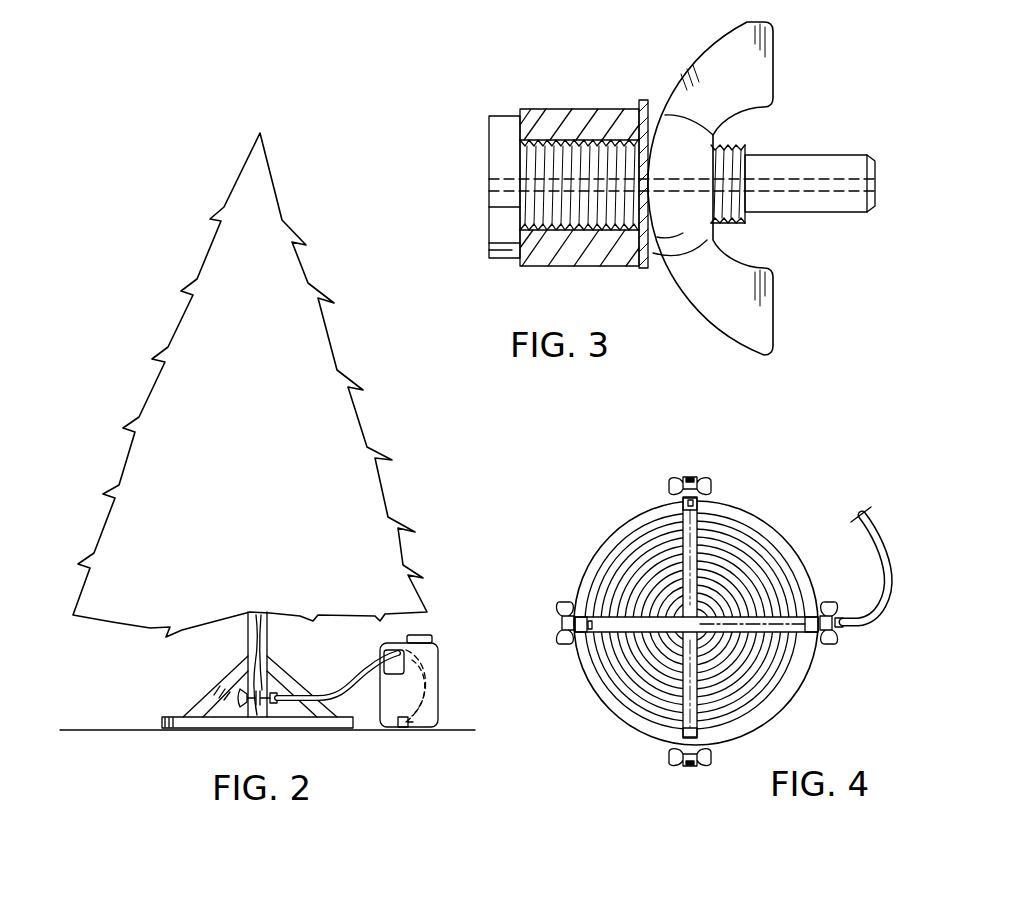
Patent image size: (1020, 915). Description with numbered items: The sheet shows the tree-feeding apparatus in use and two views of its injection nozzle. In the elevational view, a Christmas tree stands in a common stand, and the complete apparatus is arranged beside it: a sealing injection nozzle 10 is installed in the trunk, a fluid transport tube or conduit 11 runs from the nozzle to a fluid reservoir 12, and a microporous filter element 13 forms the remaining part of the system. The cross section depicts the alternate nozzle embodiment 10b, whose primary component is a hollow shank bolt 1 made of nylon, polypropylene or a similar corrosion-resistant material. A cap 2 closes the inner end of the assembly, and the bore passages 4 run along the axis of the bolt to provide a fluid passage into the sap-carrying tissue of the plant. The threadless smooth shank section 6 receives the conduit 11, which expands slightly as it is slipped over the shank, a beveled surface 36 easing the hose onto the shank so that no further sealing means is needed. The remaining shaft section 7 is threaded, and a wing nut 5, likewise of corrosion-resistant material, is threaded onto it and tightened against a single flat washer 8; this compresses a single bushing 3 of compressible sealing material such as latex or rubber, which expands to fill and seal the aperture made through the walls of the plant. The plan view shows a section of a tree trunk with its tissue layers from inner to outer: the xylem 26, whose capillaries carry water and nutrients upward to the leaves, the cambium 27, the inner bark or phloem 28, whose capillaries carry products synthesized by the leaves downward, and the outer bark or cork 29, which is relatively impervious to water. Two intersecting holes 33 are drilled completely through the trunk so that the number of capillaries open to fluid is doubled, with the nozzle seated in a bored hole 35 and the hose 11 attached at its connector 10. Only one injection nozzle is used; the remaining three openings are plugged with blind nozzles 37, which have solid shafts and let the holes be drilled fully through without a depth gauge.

In FIG. 3, the injection nozzle 10b is at (675, 188).
In FIG. 3, the end cap 2 is at (489, 121).
In FIG. 3, the bushing 3 is at (558, 109).
In FIG. 3, the compression sleeve 4 is at (489, 185).
In FIG. 3, the hollow shank bolt 1 is at (745, 150).
In FIG. 3, the smooth shank section 6 is at (810, 156).
In FIG. 3, the beveled surface 36 is at (872, 155).
In FIG. 3, the shaft section 7 is at (738, 222).
In FIG. 3, the flat washer 8 is at (643, 270).
In FIG. 3, the wing nut 5 is at (777, 308).
In FIG. 2, the sealing injection nozzle 10 is at (277, 693).
In FIG. 4, the sealing injection nozzle 10 is at (843, 627).
In FIG. 2, the fluid transport tube 11 is at (328, 686).
In FIG. 4, the fluid transport tube 11 is at (872, 524).
In FIG. 2, the fluid reservoir 12 is at (439, 654).
In FIG. 2, the microporous filter element 13 is at (402, 729).
In FIG. 4, the xylem 26 is at (660, 686).
In FIG. 4, the cambium 27 is at (602, 682).
In FIG. 4, the phloem 28 is at (762, 718).
In FIG. 4, the outer bark 29 is at (730, 745).
In FIG. 4, the intersecting holes 33 is at (698, 513).
In FIG. 4, the hole 35 is at (758, 624).
In FIG. 4, the blind nozzle 37 is at (690, 477).